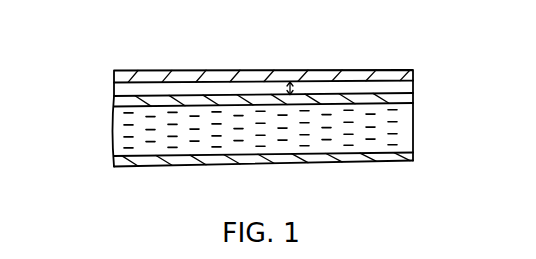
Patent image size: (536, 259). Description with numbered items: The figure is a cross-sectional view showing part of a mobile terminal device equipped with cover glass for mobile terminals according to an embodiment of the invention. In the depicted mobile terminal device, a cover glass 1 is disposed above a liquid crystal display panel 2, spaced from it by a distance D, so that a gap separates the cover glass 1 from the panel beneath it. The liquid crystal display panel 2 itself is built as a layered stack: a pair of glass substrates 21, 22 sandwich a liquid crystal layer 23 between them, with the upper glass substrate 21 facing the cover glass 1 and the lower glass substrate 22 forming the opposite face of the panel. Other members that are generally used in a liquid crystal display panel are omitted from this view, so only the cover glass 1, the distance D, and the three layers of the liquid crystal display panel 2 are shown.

The cover glass 1 is at (378, 71).
The liquid crystal display panel 2 is at (248, 131).
The glass substrate 21 is at (114, 99).
The glass substrate 22 is at (114, 167).
The liquid crystal layer 23 is at (113, 133).
The distance D is at (292, 88).